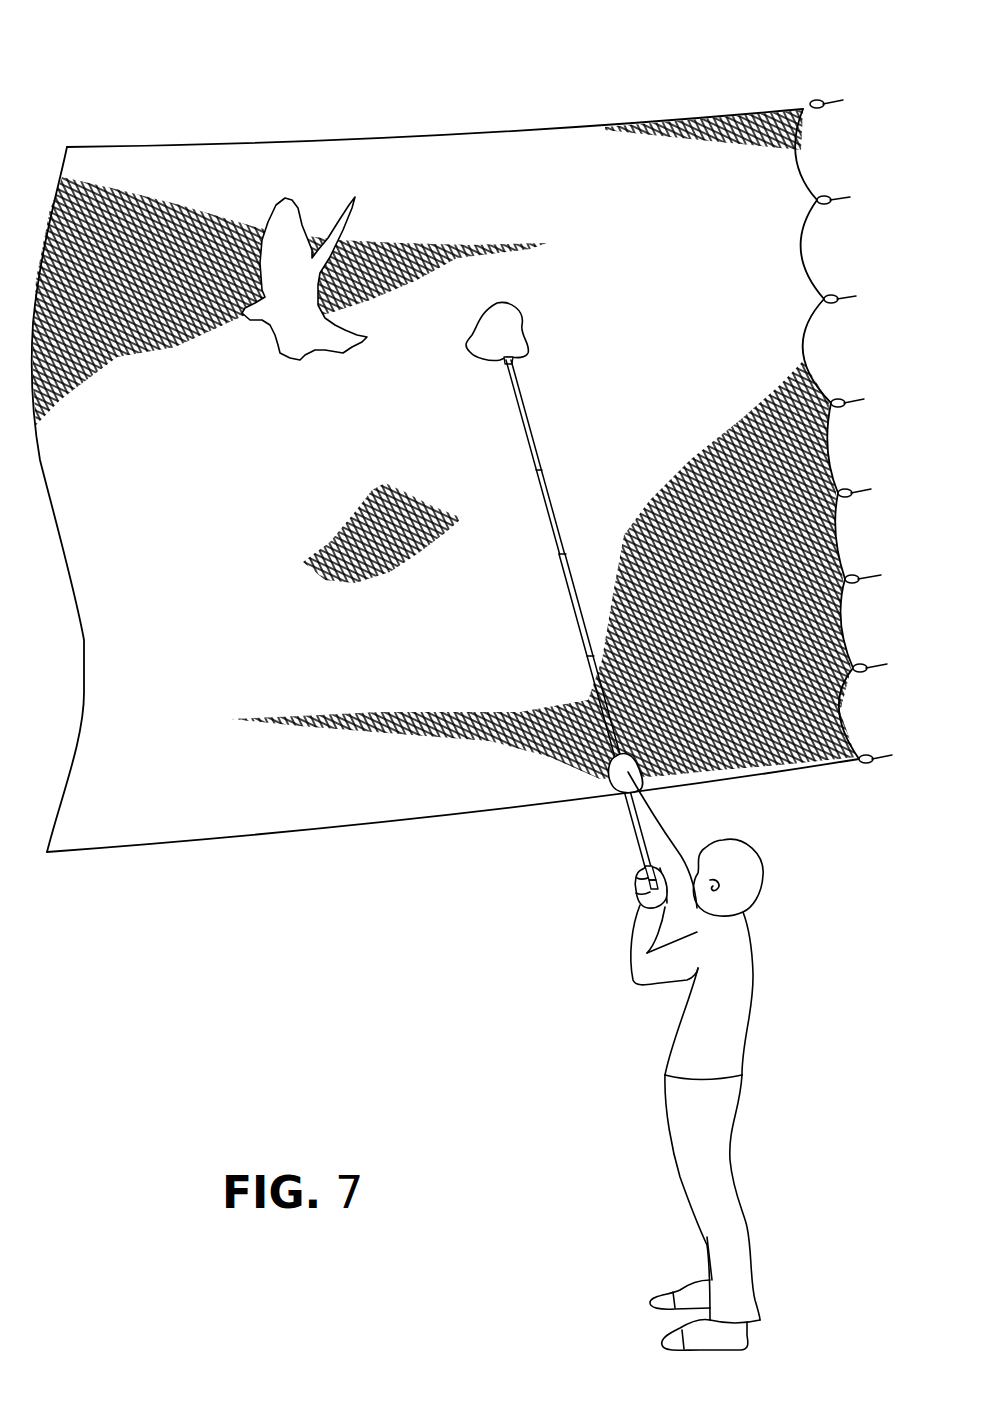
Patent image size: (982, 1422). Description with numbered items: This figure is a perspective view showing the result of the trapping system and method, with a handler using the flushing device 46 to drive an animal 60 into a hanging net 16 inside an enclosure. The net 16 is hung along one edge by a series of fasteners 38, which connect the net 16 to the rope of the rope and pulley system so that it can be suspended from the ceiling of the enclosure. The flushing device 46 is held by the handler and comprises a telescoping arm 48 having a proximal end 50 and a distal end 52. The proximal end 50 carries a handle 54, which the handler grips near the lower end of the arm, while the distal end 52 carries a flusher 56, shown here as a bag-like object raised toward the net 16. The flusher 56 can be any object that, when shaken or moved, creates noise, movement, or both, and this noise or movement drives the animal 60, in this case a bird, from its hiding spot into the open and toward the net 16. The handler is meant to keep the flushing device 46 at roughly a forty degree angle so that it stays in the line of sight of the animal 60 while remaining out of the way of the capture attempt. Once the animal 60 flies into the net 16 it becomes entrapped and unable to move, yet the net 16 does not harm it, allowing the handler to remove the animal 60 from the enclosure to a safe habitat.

The net 16 is at (140, 177).
The fastener 38 is at (818, 100).
The flushing device 46 is at (556, 514).
The telescoping arm 48 is at (566, 554).
The proximal end 50 is at (650, 877).
The distal end 52 is at (506, 361).
The handle 54 is at (652, 884).
The flusher 56 is at (498, 336).
The animal 60 is at (289, 247).